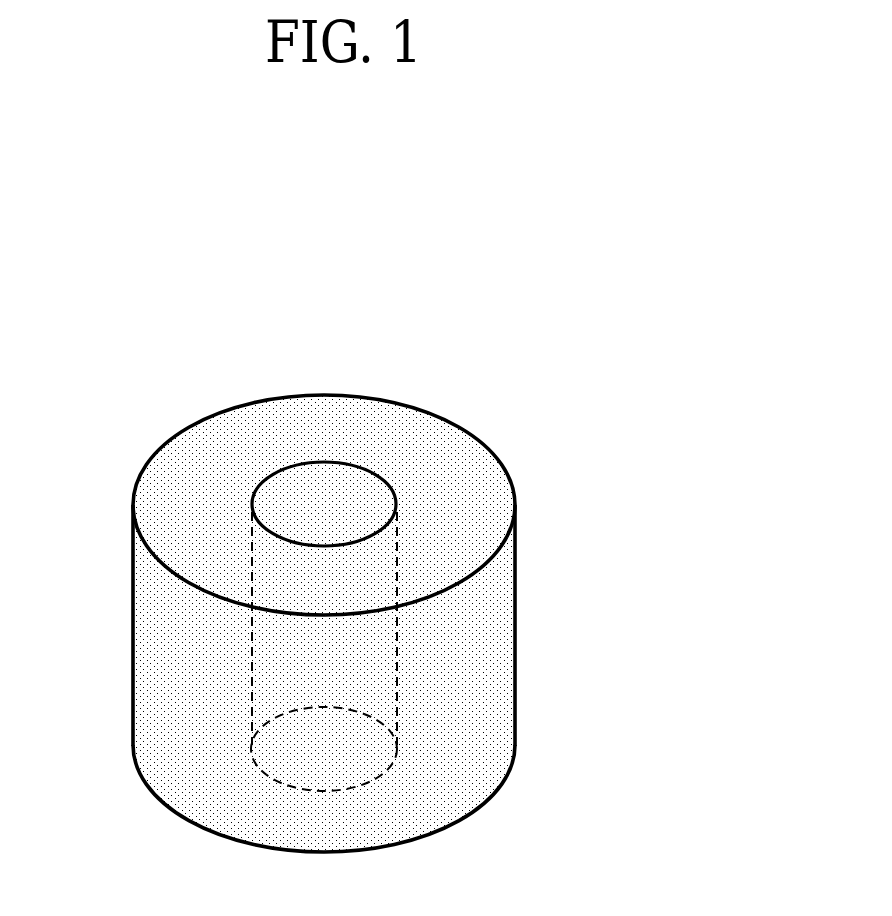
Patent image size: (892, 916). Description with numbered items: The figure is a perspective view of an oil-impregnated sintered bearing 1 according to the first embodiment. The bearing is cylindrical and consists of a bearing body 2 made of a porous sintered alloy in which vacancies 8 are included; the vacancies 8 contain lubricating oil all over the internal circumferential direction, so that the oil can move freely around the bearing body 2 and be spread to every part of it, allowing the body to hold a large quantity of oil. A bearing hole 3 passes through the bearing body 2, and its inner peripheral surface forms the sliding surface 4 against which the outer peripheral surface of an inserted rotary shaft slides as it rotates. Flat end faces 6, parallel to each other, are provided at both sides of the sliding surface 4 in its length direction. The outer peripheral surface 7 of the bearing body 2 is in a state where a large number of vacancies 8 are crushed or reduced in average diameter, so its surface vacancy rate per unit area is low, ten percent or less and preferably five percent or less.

The oil-impregnated sintered bearing 1 is at (564, 443).
The bearing body 2 is at (454, 848).
The bearing hole 3 is at (337, 518).
The sliding surface 4 is at (365, 498).
The end face 6 is at (208, 513).
The outer peripheral surface 7 is at (495, 648).
The vacancies 8 is at (190, 671).